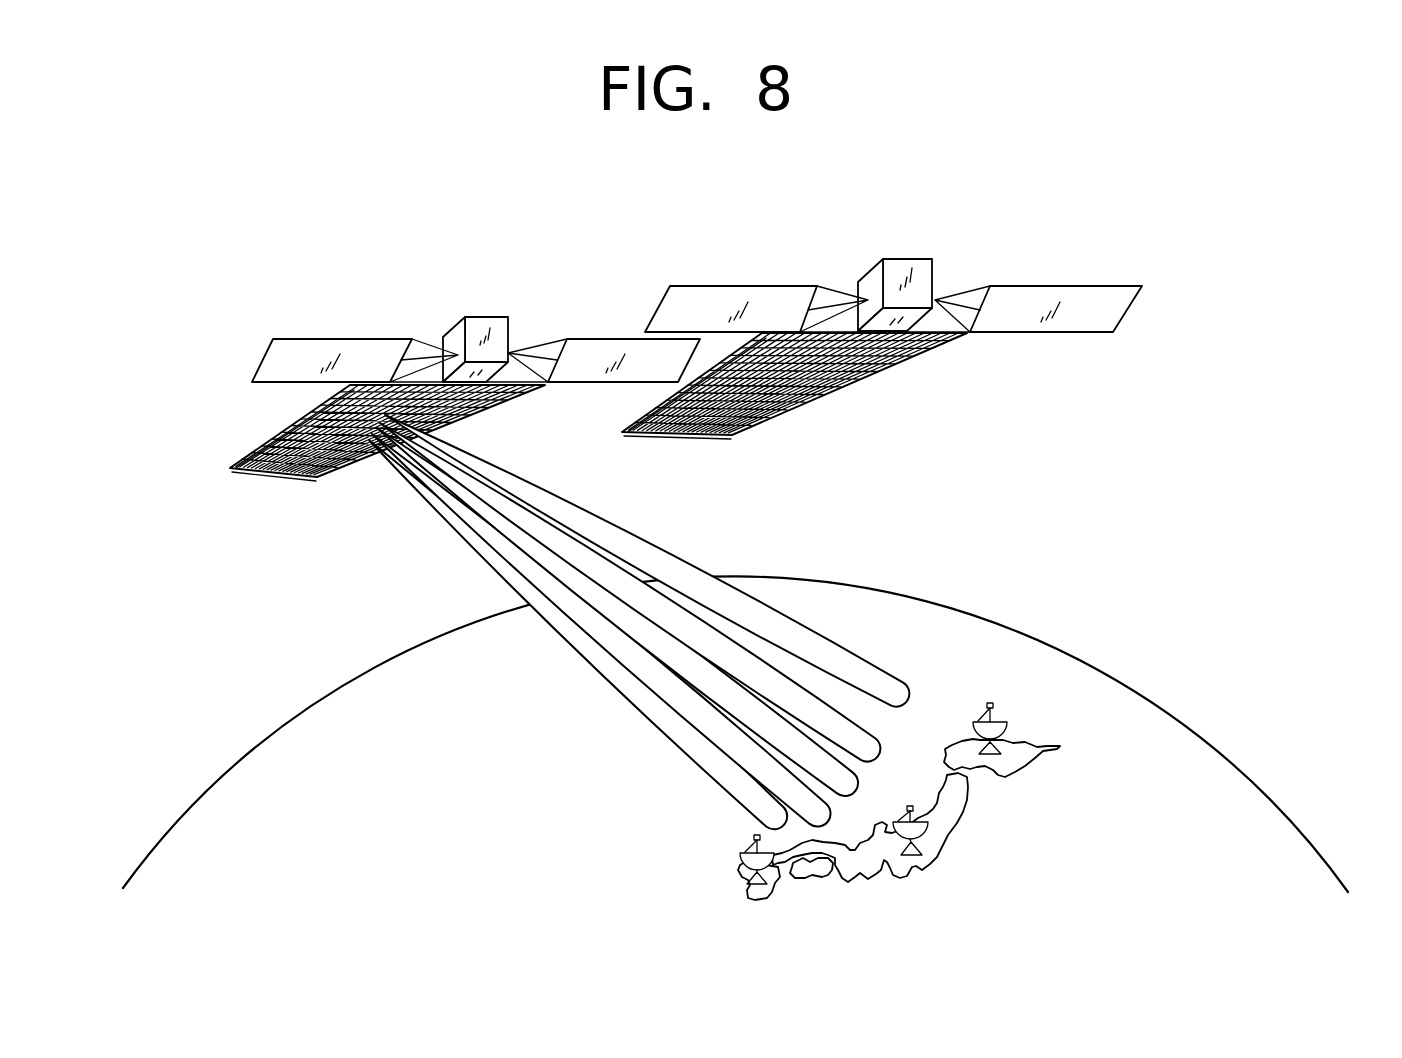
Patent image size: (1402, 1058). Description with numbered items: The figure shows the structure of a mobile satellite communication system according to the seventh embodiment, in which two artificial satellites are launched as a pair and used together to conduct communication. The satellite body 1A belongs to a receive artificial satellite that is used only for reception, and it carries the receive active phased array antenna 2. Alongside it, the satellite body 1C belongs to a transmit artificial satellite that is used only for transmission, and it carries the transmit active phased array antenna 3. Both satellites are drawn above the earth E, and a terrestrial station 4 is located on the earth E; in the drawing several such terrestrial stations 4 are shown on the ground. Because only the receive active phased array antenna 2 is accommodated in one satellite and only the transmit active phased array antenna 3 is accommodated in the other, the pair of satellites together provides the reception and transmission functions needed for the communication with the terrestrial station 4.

The satellite body of receive artificial satellite 1A is at (907, 258).
The satellite body of transmit artificial satellite 1C is at (480, 317).
The receive active phased array antenna 2 is at (843, 383).
The transmit active phased array antenna 3 is at (282, 478).
The terrestrial station 4 is at (1000, 717).
The earth E is at (1148, 697).